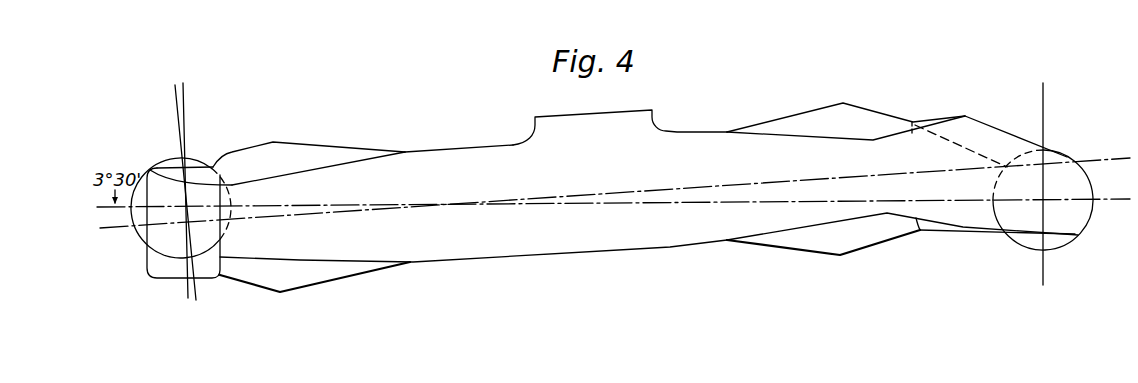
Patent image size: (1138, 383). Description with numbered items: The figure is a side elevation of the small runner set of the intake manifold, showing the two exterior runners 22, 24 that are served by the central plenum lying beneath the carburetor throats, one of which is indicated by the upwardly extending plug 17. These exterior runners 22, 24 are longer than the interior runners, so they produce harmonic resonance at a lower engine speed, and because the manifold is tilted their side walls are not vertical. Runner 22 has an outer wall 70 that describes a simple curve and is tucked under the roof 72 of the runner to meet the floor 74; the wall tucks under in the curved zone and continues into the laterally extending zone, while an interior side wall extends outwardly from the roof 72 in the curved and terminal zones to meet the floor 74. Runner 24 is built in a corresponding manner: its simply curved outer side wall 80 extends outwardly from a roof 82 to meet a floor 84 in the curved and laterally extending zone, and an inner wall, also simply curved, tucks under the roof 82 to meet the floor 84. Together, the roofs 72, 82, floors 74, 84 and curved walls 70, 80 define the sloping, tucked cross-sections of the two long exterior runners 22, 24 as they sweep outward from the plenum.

The upwardly extending plug 17 is at (623, 110).
The exterior runner 22 is at (400, 177).
The exterior runner 24 is at (753, 154).
The outer wall 70 is at (143, 253).
The roof 72 is at (293, 158).
The floor 74 is at (333, 272).
The outer side wall 80 is at (970, 150).
The roof 82 is at (845, 118).
The floor 84 is at (873, 233).